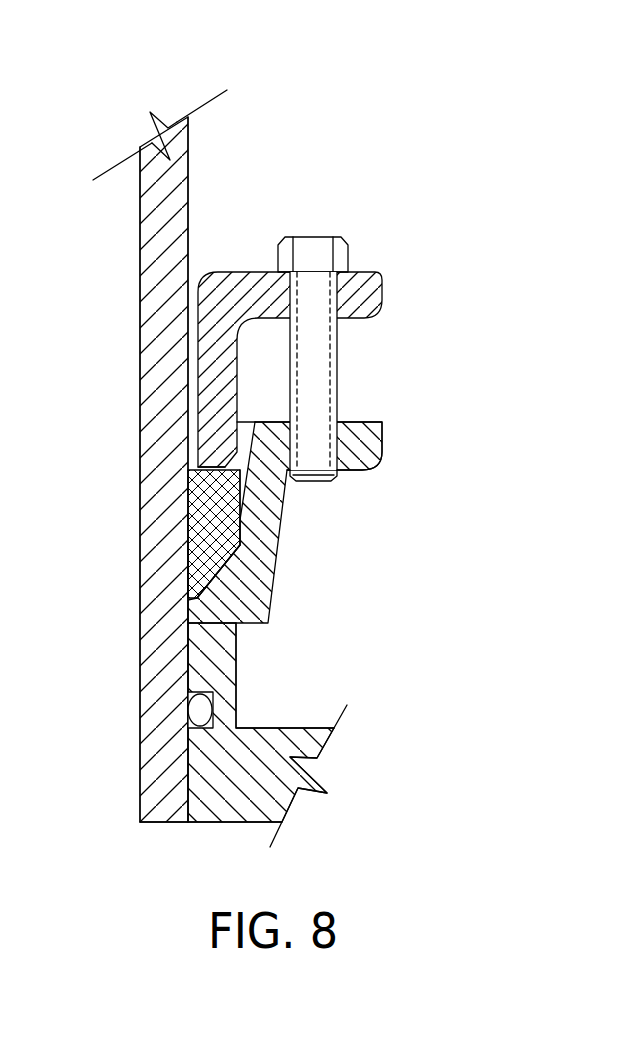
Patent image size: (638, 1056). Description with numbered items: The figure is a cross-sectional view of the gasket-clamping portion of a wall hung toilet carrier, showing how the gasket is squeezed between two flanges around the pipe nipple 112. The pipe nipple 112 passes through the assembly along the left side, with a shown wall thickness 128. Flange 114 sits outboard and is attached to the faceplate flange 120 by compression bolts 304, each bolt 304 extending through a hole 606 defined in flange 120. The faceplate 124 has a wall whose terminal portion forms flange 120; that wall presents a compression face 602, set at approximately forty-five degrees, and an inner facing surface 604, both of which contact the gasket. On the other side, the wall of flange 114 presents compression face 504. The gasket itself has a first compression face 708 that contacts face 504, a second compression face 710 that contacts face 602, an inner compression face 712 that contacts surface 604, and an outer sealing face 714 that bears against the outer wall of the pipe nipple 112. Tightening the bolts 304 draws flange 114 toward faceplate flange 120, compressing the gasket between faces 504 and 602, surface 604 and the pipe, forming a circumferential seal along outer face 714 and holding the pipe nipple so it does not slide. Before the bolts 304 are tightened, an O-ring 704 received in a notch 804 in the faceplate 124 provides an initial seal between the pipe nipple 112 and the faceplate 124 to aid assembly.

The pipe nipple 112 is at (180, 120).
The wall panel 128 is at (188, 153).
The flange 114 is at (383, 275).
The bolt 304 is at (333, 238).
The hole 606 is at (337, 423).
The inner facing surface 604 is at (243, 513).
The compression face 602 is at (228, 588).
The compression face 504 is at (205, 462).
The first compression face 708 is at (190, 472).
The inner compression face 712 is at (243, 513).
The outer sealing face 714 is at (186, 568).
The second compression face 710 is at (190, 597).
The faceplate flange 120 is at (237, 665).
The notch 804 is at (213, 723).
The O-ring 704 is at (187, 707).
The faceplate 124 is at (293, 807).